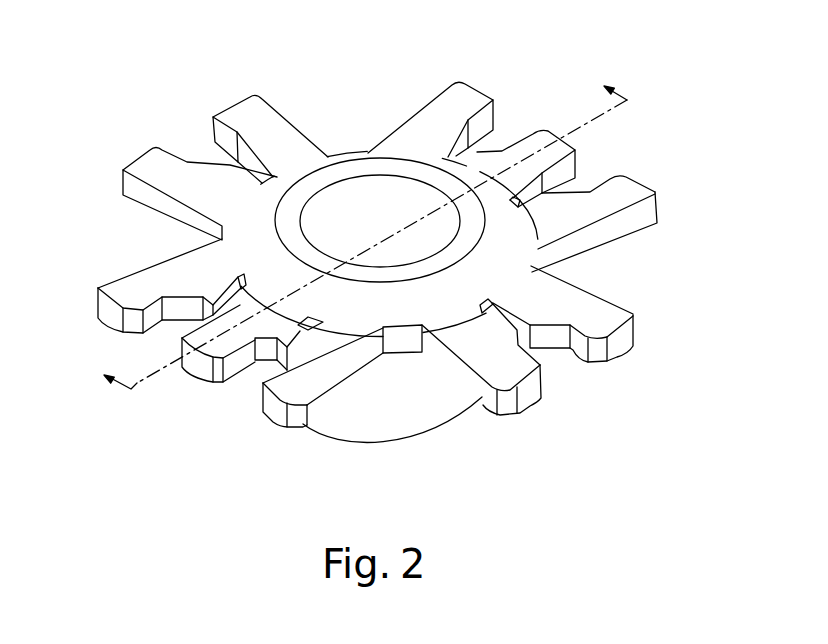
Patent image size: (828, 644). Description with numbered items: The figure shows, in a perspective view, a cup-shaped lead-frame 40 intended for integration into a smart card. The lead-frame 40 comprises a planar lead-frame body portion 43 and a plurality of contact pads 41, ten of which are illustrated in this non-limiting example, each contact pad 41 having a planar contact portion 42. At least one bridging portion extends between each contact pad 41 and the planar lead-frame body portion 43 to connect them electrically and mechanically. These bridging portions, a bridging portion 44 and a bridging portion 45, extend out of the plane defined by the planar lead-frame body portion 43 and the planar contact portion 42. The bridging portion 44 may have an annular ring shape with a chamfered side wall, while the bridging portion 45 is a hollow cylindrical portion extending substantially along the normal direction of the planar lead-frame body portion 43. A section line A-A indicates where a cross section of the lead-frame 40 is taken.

The cup-shaped lead-frame 40 is at (392, 265).
The contact pad 41 is at (495, 88).
The planar contact portion 42 is at (435, 120).
The planar lead-frame body portion 43 is at (333, 218).
The bridging portion 44 is at (552, 244).
The bridging portion 45 is at (436, 418).